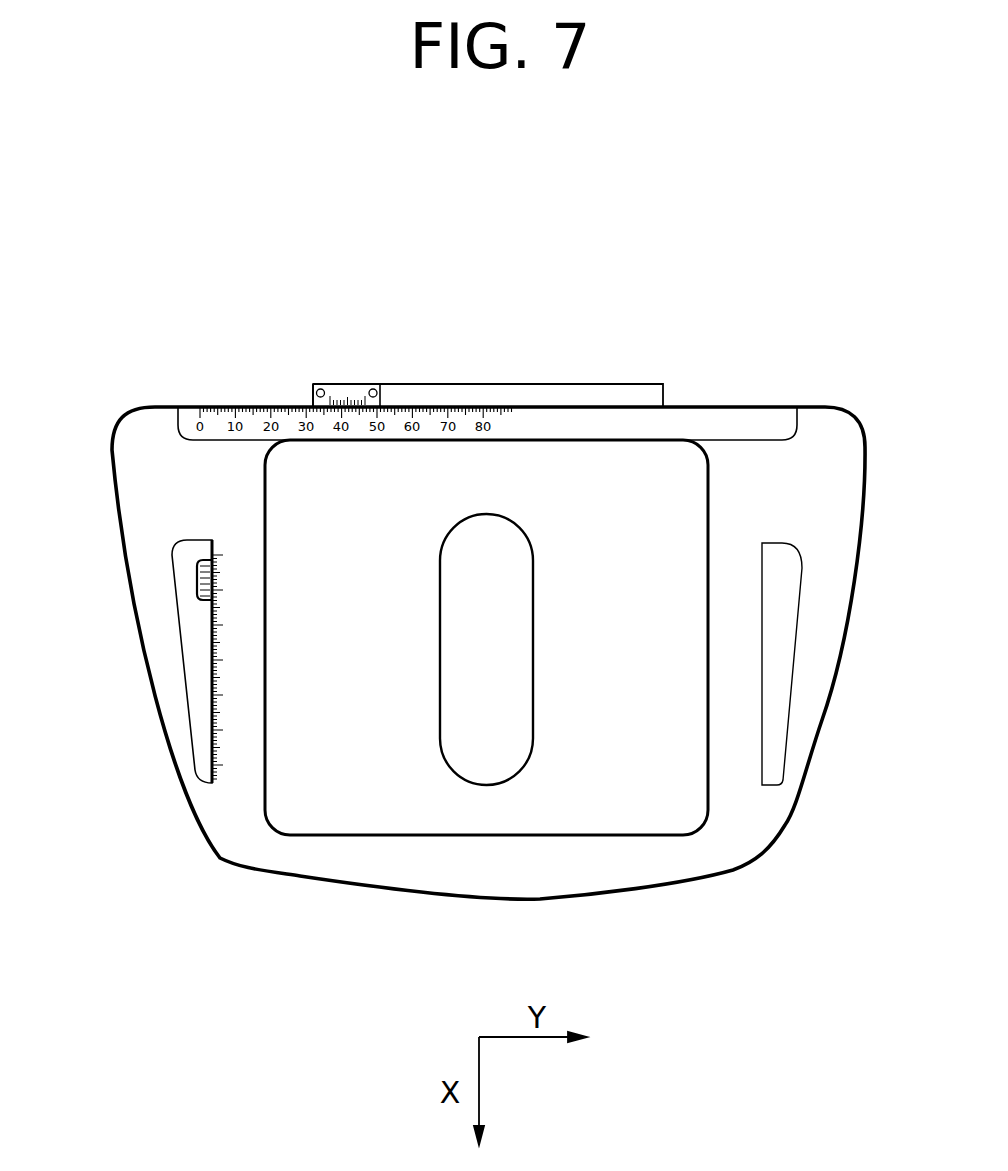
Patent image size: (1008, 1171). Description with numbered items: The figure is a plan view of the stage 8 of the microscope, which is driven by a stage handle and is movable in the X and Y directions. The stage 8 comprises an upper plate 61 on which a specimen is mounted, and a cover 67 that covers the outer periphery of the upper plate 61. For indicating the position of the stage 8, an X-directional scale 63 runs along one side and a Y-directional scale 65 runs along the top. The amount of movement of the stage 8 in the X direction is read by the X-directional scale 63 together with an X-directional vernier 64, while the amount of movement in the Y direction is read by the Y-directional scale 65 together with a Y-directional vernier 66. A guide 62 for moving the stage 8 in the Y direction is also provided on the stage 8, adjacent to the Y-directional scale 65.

The operation panel 8 is at (377, 870).
The display panel 61 is at (665, 817).
The horizontal slide bar 62 is at (618, 400).
The vertical scale 63 is at (220, 747).
The vertical slider 64 is at (200, 582).
The horizontal scale 65 is at (477, 407).
The horizontal slider 66 is at (348, 395).
The right slot 67 is at (807, 725).